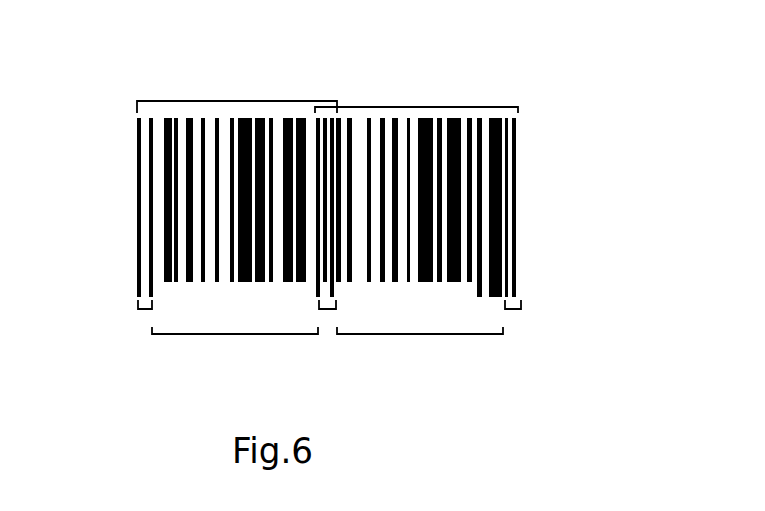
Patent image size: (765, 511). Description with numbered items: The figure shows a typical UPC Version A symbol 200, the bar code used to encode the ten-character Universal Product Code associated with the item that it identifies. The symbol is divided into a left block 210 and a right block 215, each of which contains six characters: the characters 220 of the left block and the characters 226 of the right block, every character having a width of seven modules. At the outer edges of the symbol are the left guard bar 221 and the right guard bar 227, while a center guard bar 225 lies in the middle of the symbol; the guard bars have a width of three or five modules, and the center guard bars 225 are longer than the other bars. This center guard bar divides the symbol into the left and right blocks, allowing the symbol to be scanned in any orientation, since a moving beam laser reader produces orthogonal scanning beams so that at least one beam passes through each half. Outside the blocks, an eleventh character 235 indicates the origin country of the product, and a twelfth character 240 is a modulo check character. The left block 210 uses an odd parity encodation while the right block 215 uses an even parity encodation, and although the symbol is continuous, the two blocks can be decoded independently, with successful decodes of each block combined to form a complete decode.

The UPC Version A symbol 200 is at (361, 225).
The left block 210 is at (211, 203).
The right block 215 is at (446, 217).
The characters of the left block 220 is at (210, 334).
The left guard bar 221 is at (145, 309).
The center guard bar 225 is at (327, 309).
The characters of the right block 226 is at (462, 334).
The right guard bar 227 is at (512, 309).
The eleventh character 235 is at (108, 177).
The twelfth character 240 is at (545, 178).